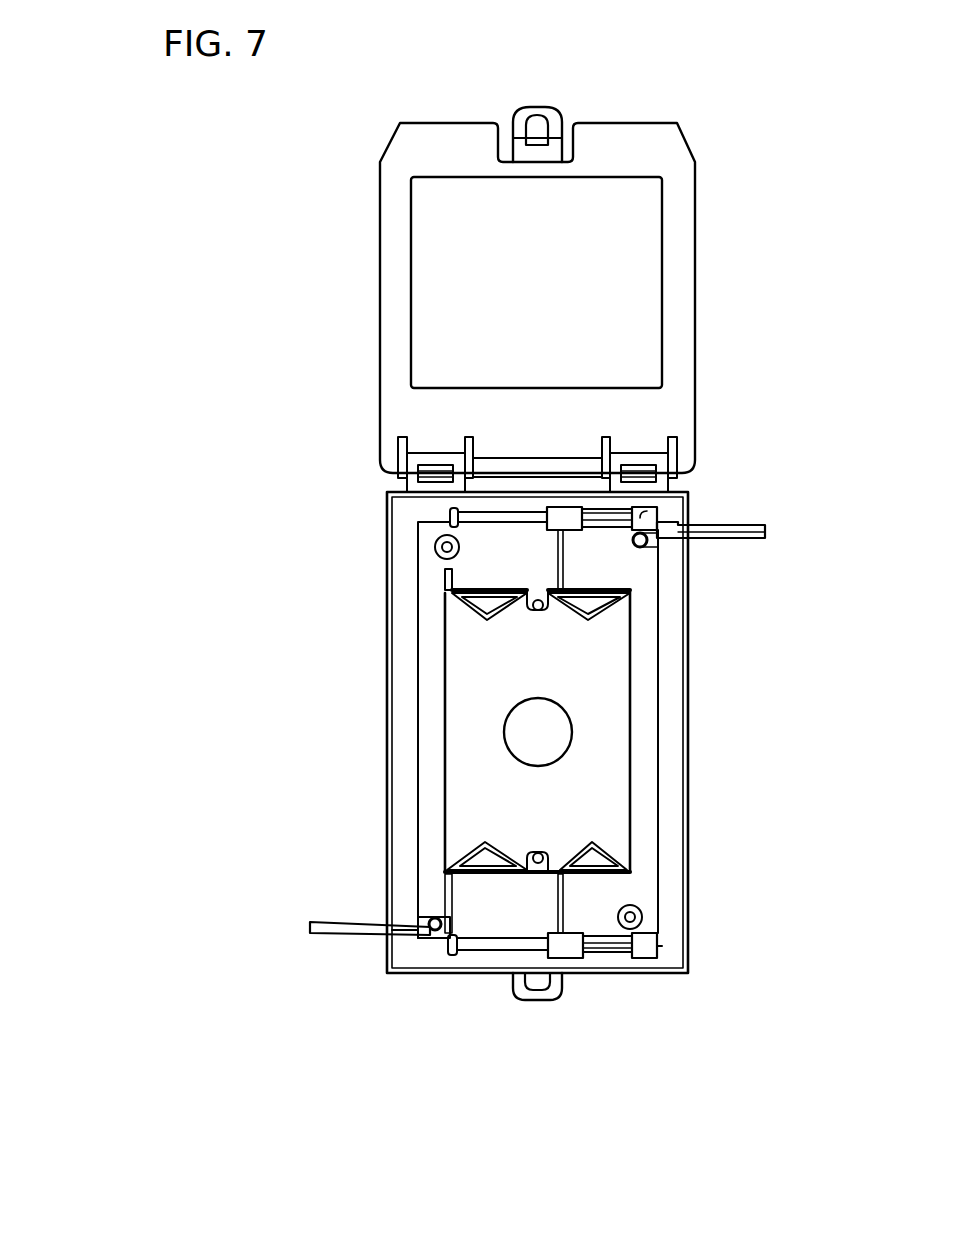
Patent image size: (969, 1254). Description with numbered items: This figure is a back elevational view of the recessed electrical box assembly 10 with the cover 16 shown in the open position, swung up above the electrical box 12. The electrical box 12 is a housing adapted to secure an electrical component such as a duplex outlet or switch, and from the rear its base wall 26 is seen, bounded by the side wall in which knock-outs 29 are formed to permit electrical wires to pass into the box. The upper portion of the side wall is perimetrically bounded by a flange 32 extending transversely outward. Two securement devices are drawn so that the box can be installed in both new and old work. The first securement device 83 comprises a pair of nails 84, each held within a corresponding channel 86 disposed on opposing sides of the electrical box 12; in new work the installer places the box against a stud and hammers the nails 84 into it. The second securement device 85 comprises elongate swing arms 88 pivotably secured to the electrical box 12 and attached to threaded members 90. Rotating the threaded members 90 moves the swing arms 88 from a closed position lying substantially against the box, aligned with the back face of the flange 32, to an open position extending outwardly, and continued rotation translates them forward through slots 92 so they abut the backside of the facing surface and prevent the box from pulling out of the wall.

The recessed electrical box assembly 10 is at (163, 380).
The electrical box 12 is at (643, 833).
The cover 16 is at (380, 320).
The base wall 26 is at (610, 695).
The knock-outs 29 is at (450, 593).
The flange 32 is at (437, 713).
The first securement device 83 is at (570, 958).
The nails 84 is at (450, 513).
The second securement device 85 is at (387, 935).
The channel 86 is at (660, 518).
The swing arms 88 is at (765, 532).
The threaded members 90 is at (433, 917).
The slots 92 is at (653, 543).